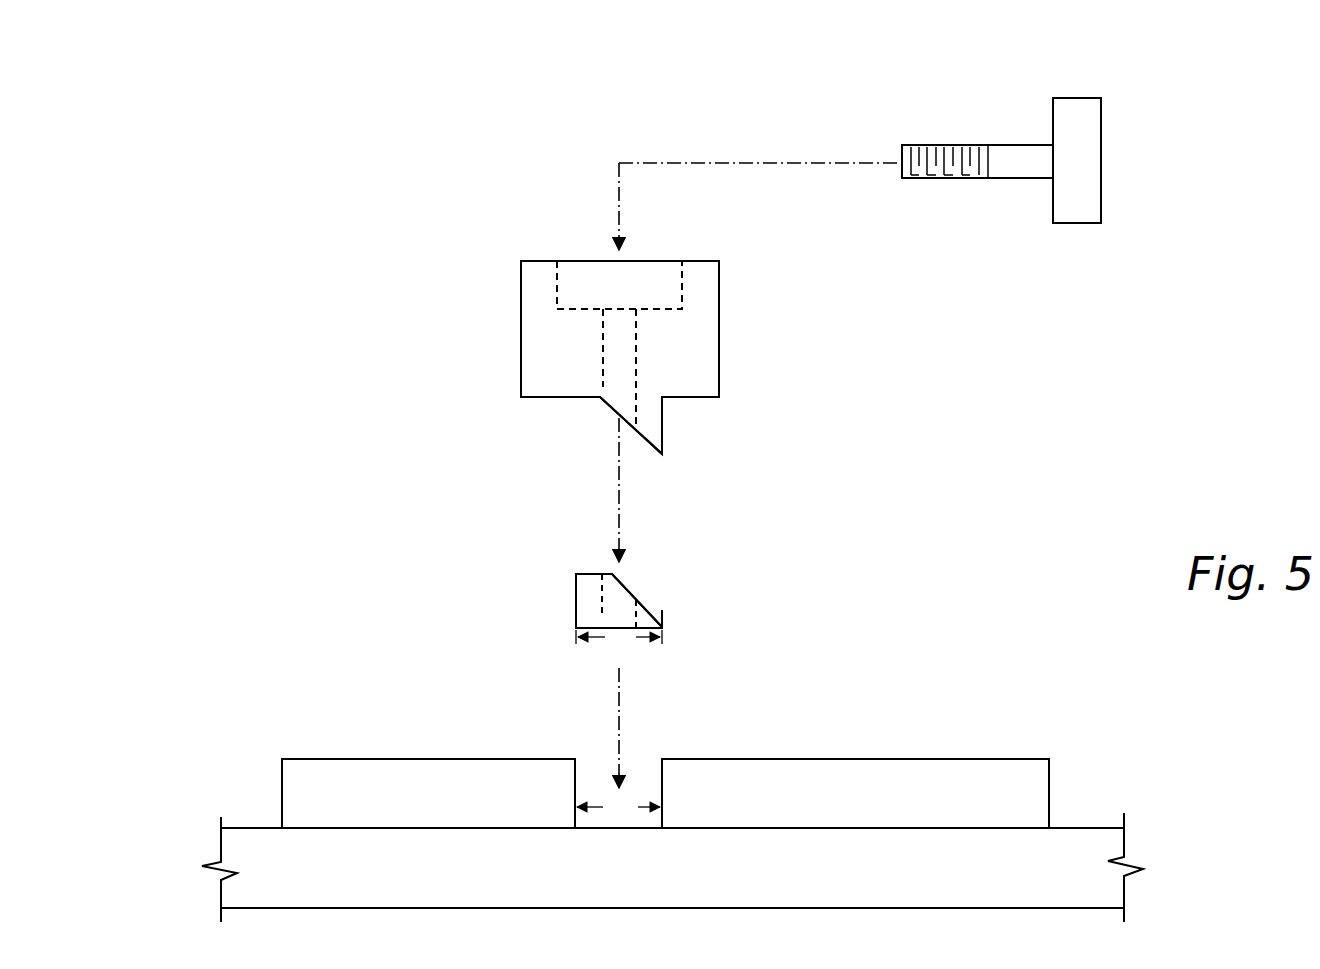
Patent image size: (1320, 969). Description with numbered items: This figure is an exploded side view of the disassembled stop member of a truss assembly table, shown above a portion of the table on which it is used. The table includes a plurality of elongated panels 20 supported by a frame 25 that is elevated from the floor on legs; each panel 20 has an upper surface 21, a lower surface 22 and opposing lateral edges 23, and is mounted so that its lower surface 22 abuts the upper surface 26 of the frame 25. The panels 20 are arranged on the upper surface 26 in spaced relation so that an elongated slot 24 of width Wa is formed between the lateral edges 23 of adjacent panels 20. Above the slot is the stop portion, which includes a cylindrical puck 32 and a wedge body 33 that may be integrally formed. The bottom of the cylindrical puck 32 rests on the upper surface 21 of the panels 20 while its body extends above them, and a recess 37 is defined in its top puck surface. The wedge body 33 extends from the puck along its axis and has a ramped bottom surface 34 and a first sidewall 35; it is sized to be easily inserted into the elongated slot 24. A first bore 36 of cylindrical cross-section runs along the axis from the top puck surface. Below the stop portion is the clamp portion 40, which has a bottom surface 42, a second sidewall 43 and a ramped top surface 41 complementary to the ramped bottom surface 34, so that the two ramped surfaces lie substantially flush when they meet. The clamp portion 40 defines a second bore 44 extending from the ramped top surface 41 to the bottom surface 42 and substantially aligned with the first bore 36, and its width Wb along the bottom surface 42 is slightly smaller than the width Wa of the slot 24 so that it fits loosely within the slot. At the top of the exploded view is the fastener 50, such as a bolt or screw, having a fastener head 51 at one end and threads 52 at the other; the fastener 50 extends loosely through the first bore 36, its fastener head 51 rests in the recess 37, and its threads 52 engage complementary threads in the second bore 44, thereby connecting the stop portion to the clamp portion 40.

The elongated panel 20 is at (960, 776).
The upper surface 21 is at (865, 759).
The lower surface 22 is at (1000, 828).
The lateral edges 23 is at (577, 773).
The elongated slot 24 is at (628, 772).
The frame 25 is at (226, 841).
The upper surface of frame 26 is at (262, 828).
The cylindrical puck 32 is at (712, 282).
The wedge body 33 is at (657, 407).
The ramped bottom surface 34 is at (650, 447).
The first sidewall 35 is at (663, 433).
The first bore 36 is at (628, 362).
The recess 37 is at (585, 270).
The clamp portion 40 is at (578, 605).
The ramped top surface 41 is at (650, 610).
The bottom surface 42 is at (664, 634).
The second sidewall 43 is at (576, 583).
The second bore 44 is at (640, 600).
The fastener 50 is at (1020, 118).
The fastener head 51 is at (1085, 118).
The threads 52 is at (918, 147).